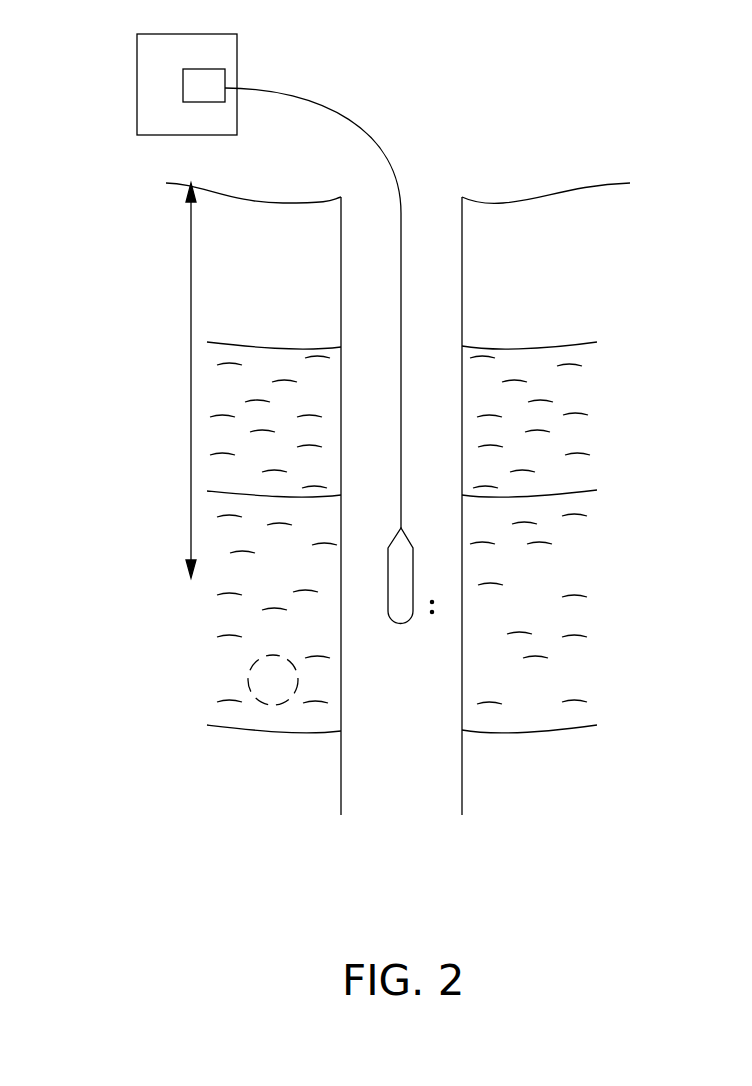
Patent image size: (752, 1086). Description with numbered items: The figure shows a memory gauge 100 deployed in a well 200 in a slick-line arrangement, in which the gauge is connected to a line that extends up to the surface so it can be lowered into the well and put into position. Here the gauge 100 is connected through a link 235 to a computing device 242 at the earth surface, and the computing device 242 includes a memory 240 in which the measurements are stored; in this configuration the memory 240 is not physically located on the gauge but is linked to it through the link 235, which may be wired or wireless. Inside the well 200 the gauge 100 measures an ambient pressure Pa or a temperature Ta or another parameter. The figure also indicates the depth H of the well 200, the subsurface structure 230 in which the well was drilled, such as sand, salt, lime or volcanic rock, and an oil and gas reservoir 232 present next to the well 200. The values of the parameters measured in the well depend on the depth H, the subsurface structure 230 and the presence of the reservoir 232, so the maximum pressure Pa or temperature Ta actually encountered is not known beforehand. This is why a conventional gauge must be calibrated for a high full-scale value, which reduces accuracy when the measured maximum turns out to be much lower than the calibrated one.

The memory gauge 100 is at (413, 568).
The well 200 is at (462, 278).
The subsurface structure 230 is at (212, 392).
The oil and gas reservoir 232 is at (273, 680).
The link 235 is at (368, 140).
The memory 240 is at (245, 71).
The computing device 242 is at (177, 34).
The ambient pressure Pa is at (432, 602).
The temperature Ta is at (432, 612).
The depth H is at (191, 285).